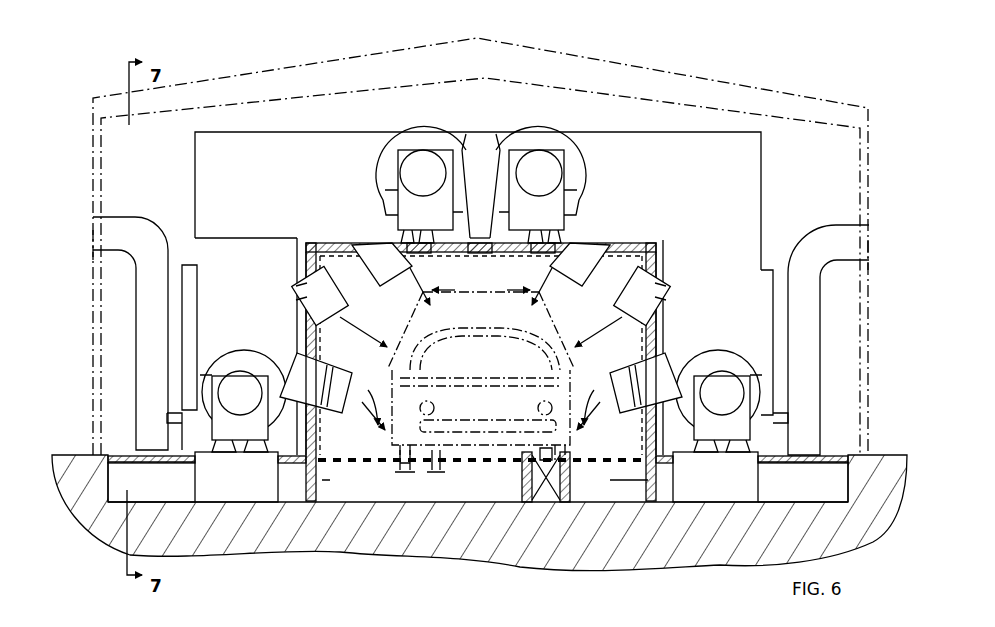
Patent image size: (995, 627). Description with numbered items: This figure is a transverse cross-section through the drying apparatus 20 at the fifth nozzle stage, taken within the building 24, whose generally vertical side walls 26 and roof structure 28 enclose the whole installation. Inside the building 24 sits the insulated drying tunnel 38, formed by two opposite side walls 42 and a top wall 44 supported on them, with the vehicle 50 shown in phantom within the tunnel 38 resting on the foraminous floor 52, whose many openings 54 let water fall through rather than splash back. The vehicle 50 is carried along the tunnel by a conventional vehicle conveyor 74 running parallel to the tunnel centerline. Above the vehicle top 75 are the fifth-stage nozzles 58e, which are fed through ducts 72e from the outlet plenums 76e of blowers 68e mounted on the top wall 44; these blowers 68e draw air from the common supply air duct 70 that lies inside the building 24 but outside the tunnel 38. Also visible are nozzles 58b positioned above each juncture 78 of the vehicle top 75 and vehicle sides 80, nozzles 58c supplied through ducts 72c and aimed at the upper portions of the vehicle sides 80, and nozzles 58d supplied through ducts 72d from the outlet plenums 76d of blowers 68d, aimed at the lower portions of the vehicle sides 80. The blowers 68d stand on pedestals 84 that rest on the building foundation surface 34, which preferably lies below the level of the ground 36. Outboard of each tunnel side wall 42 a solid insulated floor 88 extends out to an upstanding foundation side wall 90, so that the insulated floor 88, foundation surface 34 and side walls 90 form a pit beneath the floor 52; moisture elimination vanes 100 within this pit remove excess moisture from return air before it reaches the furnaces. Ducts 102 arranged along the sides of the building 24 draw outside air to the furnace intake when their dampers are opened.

The drying apparatus 20 is at (220, 115).
The building 24 is at (280, 64).
The roof structure 28 is at (568, 60).
The side walls 26 is at (93, 198).
The ducts 102 is at (136, 322).
The common supply air duct 70 is at (761, 195).
The blowers 68e is at (507, 148).
The outlet plenums 76e is at (392, 180).
The ducts 72e is at (480, 215).
The top wall 44 is at (336, 268).
The drying tunnel 38 is at (648, 258).
The nozzles 58b is at (392, 272).
The juncture 78 is at (432, 290).
The nozzles 58e is at (447, 290).
The ducts 72c is at (305, 296).
The nozzles 58c is at (345, 316).
The vehicle top 75 is at (445, 300).
The vehicle 50 is at (497, 334).
The outlet plenums 76d is at (214, 352).
The blowers 68d is at (246, 356).
The ducts 72d is at (481, 383).
The nozzles 58d is at (358, 378).
The vehicle sides 80 is at (484, 399).
The ground 36 is at (66, 456).
The insulated floor 88 is at (120, 456).
The foundation side wall 90 is at (126, 490).
The foundation surface 34 is at (170, 500).
The pedestals 84 is at (248, 488).
The side walls 42 is at (318, 444).
The floor 52 is at (407, 451).
The openings 54 is at (590, 460).
The moisture elimination vanes 100 is at (485, 478).
The vehicle conveyor 74 is at (525, 505).